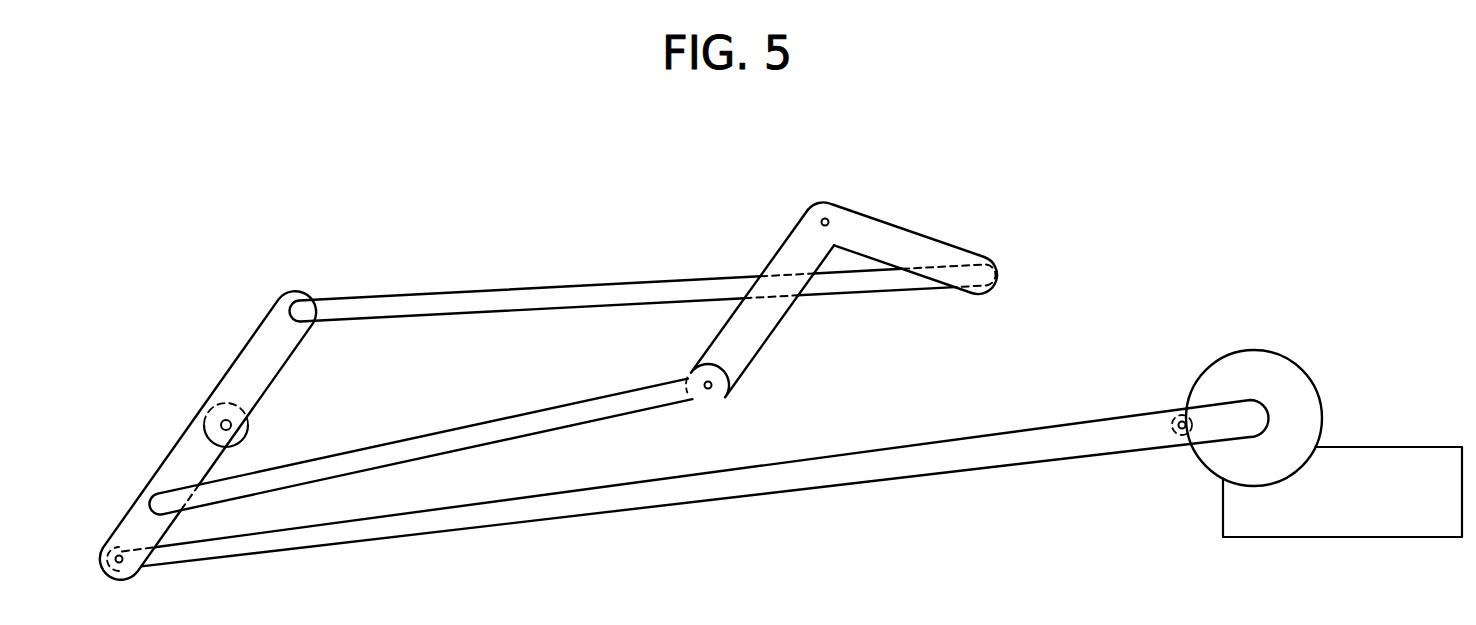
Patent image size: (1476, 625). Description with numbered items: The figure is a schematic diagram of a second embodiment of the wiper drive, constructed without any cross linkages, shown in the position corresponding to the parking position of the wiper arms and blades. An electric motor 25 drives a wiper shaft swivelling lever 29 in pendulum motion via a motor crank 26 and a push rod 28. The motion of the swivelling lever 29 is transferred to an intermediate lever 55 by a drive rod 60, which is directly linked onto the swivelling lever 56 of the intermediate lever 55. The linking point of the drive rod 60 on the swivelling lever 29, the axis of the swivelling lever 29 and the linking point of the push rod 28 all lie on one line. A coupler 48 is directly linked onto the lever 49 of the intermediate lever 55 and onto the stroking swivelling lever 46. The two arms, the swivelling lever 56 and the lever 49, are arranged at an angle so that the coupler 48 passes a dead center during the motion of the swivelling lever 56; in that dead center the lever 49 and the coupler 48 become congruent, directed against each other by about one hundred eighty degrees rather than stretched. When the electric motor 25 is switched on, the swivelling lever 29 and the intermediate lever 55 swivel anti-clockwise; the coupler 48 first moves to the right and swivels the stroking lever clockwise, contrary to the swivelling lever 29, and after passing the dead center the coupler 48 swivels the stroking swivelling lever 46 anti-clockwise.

The electric motor 25 is at (1408, 462).
The motor crank 26 is at (1240, 410).
The push rod 28 is at (728, 483).
The wiper shaft swivelling lever 29 is at (135, 520).
The stroking swivelling lever 46 is at (252, 357).
The coupler 48 is at (523, 292).
The lever 49 is at (922, 248).
The intermediate lever 55 is at (844, 262).
The swivelling lever 56 is at (753, 335).
The drive rod 60 is at (494, 423).